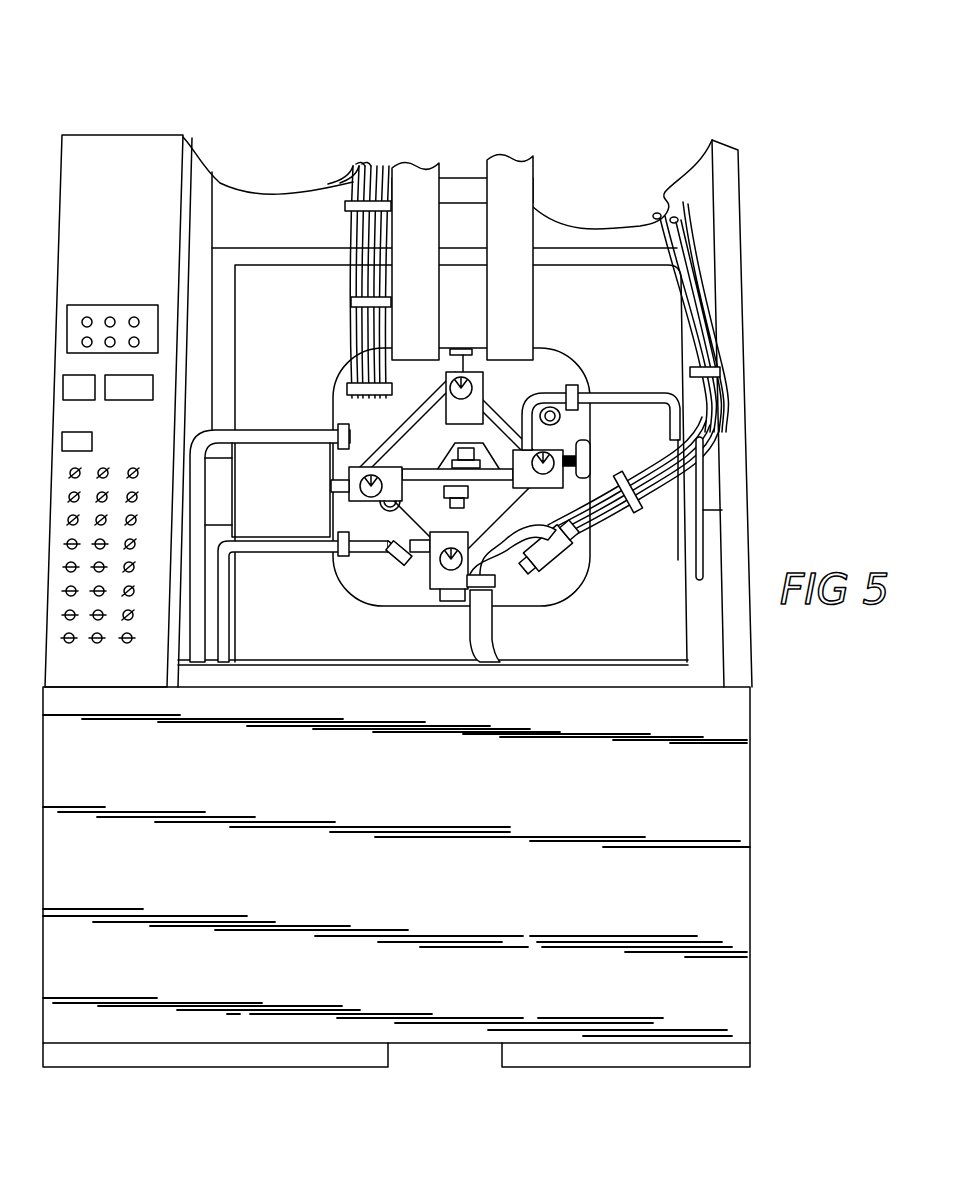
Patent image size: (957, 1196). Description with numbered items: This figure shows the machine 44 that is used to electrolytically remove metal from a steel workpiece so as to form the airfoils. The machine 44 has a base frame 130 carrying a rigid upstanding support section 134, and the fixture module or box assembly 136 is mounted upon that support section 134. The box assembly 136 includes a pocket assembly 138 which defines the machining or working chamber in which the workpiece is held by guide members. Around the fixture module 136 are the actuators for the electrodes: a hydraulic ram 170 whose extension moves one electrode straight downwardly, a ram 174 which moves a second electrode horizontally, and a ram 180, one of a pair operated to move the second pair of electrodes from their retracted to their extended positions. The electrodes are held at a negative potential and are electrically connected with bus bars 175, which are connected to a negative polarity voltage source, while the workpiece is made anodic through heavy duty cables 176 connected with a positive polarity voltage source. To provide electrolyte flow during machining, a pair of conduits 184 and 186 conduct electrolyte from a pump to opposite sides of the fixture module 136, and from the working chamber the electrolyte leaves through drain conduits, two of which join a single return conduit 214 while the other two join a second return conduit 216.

The machine 44 is at (818, 3).
The base frame 130 is at (710, 898).
The upstanding support section 134 is at (268, 292).
The fixture module or box assembly 136 is at (506, 382).
The pocket assembly 138 is at (450, 470).
The hydraulic ram 170 is at (468, 221).
The ram 174 is at (705, 470).
The bus bars 175 is at (470, 110).
The heavy duty cables 176 is at (345, 184).
The ram 180 is at (213, 495).
The conduit 184 is at (296, 519).
The conduit 186 is at (663, 353).
The return conduit 214 is at (297, 405).
The return conduit 216 is at (490, 622).